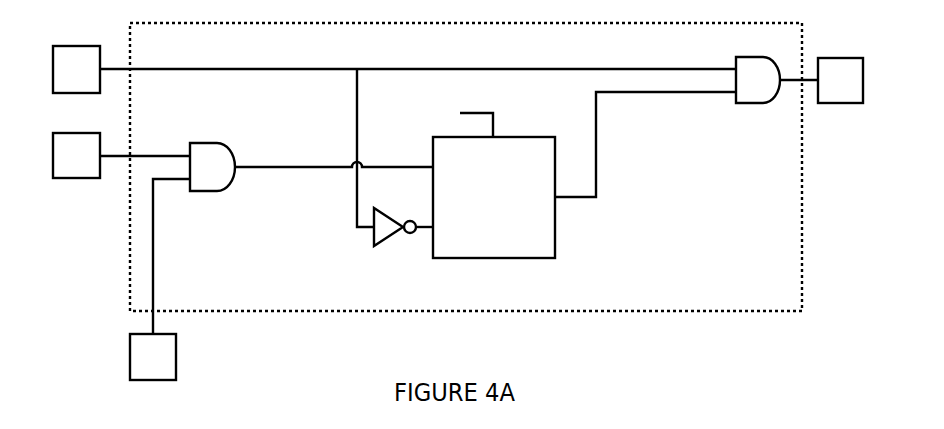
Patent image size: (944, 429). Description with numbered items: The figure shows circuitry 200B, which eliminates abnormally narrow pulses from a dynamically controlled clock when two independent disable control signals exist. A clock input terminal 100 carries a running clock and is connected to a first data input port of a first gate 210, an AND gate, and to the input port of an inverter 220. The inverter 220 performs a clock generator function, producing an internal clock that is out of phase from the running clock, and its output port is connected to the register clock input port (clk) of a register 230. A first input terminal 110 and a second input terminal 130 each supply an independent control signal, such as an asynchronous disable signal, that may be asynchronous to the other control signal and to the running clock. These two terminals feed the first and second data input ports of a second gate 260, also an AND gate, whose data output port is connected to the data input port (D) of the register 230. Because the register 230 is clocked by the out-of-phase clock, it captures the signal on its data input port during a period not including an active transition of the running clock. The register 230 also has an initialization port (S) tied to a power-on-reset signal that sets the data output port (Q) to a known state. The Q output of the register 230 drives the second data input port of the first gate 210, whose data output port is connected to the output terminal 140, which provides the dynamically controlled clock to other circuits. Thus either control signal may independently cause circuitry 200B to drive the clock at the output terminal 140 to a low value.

The circuitry 200B is at (183, 52).
The clock input terminal 100 is at (62, 78).
The second input terminal 130 is at (62, 165).
The first input terminal 110 is at (138, 366).
The output terminal 140 is at (826, 90).
The second gate 260 is at (198, 175).
The inverter 220 is at (386, 244).
The register 230 is at (508, 206).
The first gate 210 is at (744, 90).